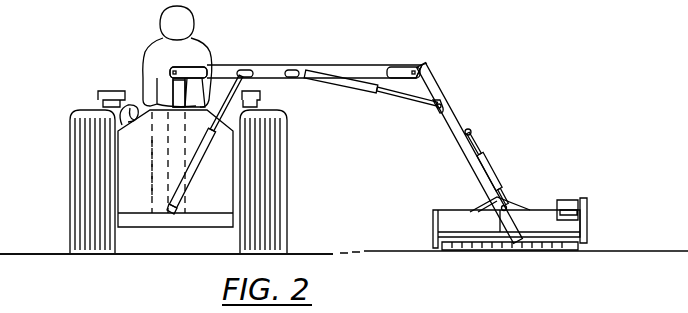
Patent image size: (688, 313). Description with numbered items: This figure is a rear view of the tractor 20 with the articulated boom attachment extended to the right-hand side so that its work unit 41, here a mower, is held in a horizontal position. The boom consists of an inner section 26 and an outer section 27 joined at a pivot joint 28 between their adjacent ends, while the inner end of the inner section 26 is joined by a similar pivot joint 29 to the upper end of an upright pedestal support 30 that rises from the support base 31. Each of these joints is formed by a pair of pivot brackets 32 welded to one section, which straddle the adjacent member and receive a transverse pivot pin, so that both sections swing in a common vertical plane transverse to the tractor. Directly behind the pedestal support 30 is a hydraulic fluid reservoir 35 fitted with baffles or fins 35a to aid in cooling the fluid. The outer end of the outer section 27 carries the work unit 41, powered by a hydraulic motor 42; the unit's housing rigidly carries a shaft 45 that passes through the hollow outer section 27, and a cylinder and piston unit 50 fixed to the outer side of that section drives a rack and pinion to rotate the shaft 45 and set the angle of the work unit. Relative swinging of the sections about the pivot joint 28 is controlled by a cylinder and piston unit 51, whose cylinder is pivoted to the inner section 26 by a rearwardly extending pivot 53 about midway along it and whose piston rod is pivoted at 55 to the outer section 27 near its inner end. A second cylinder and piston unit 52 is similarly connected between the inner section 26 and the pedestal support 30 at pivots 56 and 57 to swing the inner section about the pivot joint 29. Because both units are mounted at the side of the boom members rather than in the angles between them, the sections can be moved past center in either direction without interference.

The tractor 20 is at (296, 163).
The inner section 26 is at (273, 72).
The outer section 27 is at (452, 122).
The pivot joint 28 is at (424, 66).
The pivot joint 29 is at (173, 72).
The pedestal support 30 is at (170, 93).
The support base 31 is at (153, 222).
The pivot brackets 32 is at (192, 72).
The reservoir 35 is at (148, 178).
The baffles or fins 35a is at (152, 160).
The work unit 41 is at (530, 203).
The hydraulic motor 42 is at (573, 202).
The shaft 45 is at (485, 197).
The cylinder and piston unit 50 is at (485, 153).
The cylinder and piston unit 51 is at (350, 88).
The cylinder and piston unit 52 is at (177, 193).
The pivot 53 is at (295, 68).
The pivot 55 is at (446, 100).
The pivot 56 is at (252, 43).
The pivot 57 is at (173, 212).